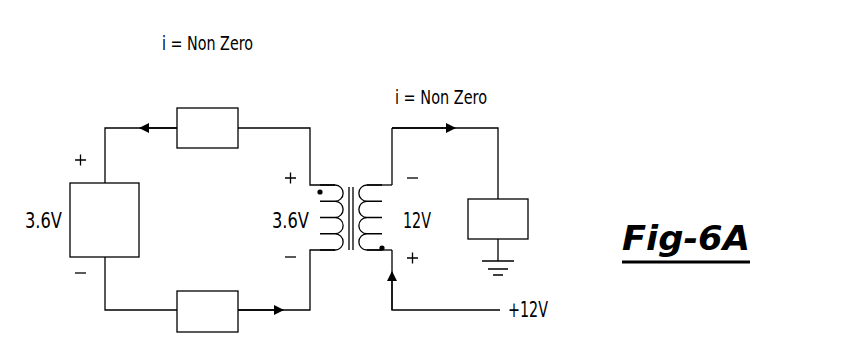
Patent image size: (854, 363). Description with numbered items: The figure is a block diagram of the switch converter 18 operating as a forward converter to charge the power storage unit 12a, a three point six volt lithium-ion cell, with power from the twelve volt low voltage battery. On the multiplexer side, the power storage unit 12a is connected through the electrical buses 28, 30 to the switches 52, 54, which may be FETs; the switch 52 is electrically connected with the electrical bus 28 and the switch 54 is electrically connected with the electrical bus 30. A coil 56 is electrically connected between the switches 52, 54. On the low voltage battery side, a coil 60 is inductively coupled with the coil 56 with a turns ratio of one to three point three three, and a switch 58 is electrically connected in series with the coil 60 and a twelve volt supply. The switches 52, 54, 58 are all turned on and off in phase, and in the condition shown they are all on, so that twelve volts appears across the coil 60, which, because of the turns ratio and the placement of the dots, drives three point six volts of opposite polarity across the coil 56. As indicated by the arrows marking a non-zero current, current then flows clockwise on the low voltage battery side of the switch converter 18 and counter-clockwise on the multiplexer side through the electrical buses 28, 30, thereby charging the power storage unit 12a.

The switch converter 18 is at (341, 88).
The electrical bus 28 is at (118, 128).
The electrical bus 30 is at (135, 310).
The power storage unit 12a is at (139, 220).
The switch 52 is at (207, 108).
The switch 54 is at (207, 291).
The coil 56 is at (322, 184).
The switch 58 is at (528, 220).
The coil 60 is at (379, 184).